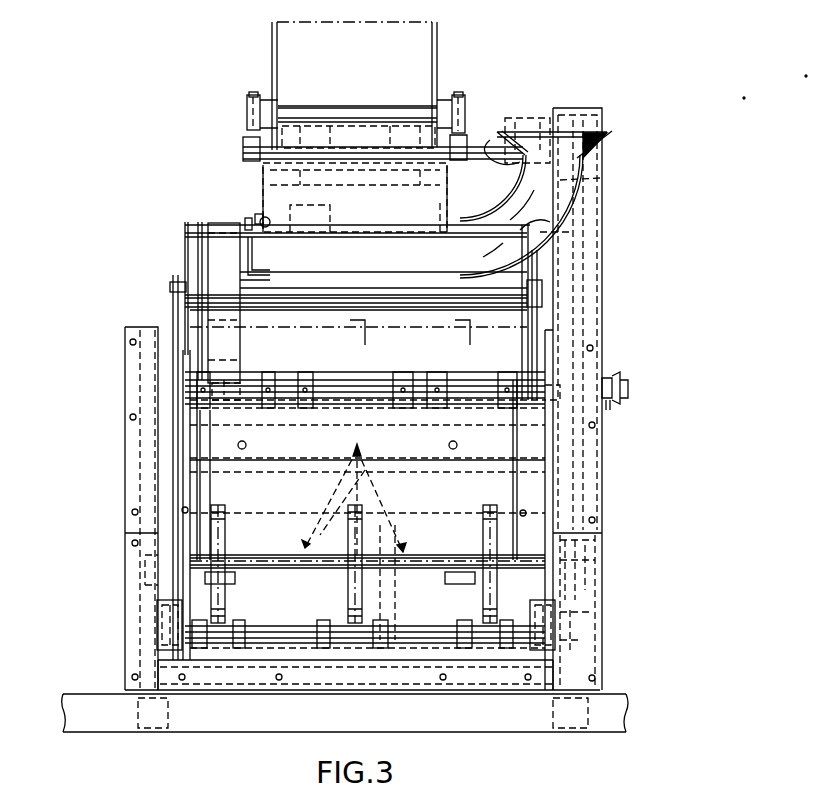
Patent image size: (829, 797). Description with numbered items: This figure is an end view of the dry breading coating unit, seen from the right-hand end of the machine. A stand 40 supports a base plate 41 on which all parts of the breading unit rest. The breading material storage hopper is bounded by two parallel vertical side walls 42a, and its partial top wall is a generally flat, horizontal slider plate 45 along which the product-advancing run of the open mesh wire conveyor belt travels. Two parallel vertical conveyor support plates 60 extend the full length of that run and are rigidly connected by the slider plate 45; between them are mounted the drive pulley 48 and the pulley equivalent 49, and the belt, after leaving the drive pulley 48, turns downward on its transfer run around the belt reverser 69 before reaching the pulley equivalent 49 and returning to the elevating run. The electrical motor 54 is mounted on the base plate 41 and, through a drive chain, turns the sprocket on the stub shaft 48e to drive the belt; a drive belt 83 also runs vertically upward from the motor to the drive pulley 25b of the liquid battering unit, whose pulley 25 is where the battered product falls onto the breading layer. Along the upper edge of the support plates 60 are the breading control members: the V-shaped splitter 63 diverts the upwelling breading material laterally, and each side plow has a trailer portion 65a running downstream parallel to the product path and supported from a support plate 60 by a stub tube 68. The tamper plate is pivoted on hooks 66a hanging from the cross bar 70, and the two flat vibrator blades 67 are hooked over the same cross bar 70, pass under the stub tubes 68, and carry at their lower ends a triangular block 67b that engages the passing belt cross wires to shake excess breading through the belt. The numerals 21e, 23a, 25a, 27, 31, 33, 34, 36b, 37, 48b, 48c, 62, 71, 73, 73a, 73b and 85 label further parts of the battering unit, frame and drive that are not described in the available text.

The drive shaft 21e is at (464, 178).
The hopper side wall 23a is at (456, 55).
The pulley 25 is at (330, 110).
The feed roller chute plate 25a is at (510, 140).
The drive pulley 25b is at (600, 178).
The feed housing 27 is at (352, 225).
The guide plate 31 is at (288, 212).
The upper roller 33 is at (358, 107).
The roller bearing bracket 34 is at (248, 103).
The curved chute 36b is at (500, 212).
The deflector 37 is at (520, 135).
The stand 40 is at (490, 732).
The base plate 41 is at (335, 695).
The vertical side walls 42a is at (618, 345).
The slider plate 45 is at (370, 377).
The drive pulley 48 is at (340, 400).
The shaft end coupling 48b is at (612, 400).
The bearing bracket 48c is at (565, 382).
The stub shaft 48e is at (606, 410).
The idler pulley equivalent 49 is at (320, 620).
The electrical motor 54 is at (420, 605).
The conveyor support plates 60 is at (172, 320).
The shaft bearing block 62 is at (157, 618).
The splitter 63 is at (330, 375).
The trailer portion 65a is at (268, 372).
The hooks 66a is at (248, 218).
The vibrator blades 67 is at (212, 250).
The triangular block 67b is at (225, 375).
The stub tube 68 is at (185, 290).
The belt reverser 69 is at (225, 540).
The cross bar 70 is at (198, 222).
The intermediate shaft 71 is at (288, 562).
The conveyor plate 73 is at (272, 501).
The plate hole 73a is at (190, 438).
The plate pivot path 73b is at (360, 499).
The drive belt 83 is at (580, 232).
The cross bar 85 is at (185, 230).